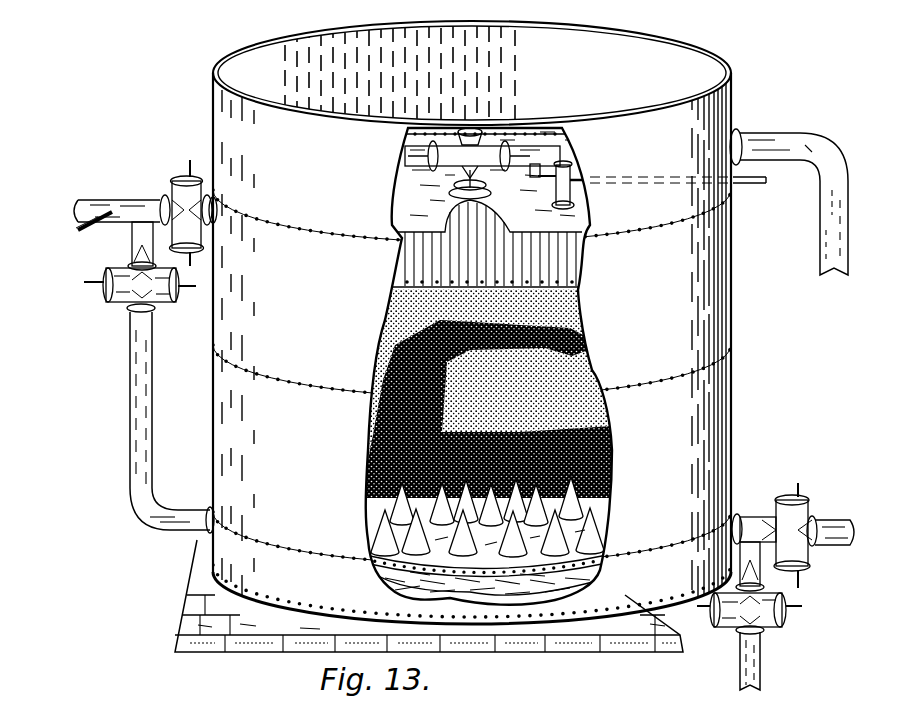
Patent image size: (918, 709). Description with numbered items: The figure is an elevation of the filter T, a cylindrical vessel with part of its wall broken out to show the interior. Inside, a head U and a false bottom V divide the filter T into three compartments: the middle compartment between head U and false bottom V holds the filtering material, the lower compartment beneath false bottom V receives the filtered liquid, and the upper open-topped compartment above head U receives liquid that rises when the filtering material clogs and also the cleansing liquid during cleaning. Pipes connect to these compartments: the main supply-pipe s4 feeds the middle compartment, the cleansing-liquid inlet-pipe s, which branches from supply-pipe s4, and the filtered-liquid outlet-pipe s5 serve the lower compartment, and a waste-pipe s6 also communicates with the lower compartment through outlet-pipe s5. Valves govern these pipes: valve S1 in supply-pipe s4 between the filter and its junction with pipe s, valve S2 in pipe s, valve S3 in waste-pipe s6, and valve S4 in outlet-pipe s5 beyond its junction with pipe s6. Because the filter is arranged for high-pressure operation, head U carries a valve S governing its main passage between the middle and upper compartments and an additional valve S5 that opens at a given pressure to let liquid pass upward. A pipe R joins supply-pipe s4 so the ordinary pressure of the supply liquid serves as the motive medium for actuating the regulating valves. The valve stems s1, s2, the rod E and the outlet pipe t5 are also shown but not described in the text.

The filter T is at (472, 325).
The valve S is at (482, 163).
The valve S1 is at (186, 208).
The valve S2 is at (129, 275).
The valve S3 is at (752, 592).
The valve S4 is at (785, 535).
The valve S5 is at (566, 180).
The cleansing-liquid inlet-pipe s is at (172, 422).
The valve stem s1 is at (85, 282).
The valve stem s2 is at (194, 288).
The main supply-pipe s4 is at (117, 201).
The filtered-liquid outlet-pipe s5 is at (830, 539).
The waste-pipe s6 is at (760, 661).
The pipe R is at (94, 232).
The head U is at (405, 201).
The false bottom V is at (372, 515).
The cone v is at (486, 559).
The rod E is at (678, 190).
The outlet pipe t5 is at (789, 220).